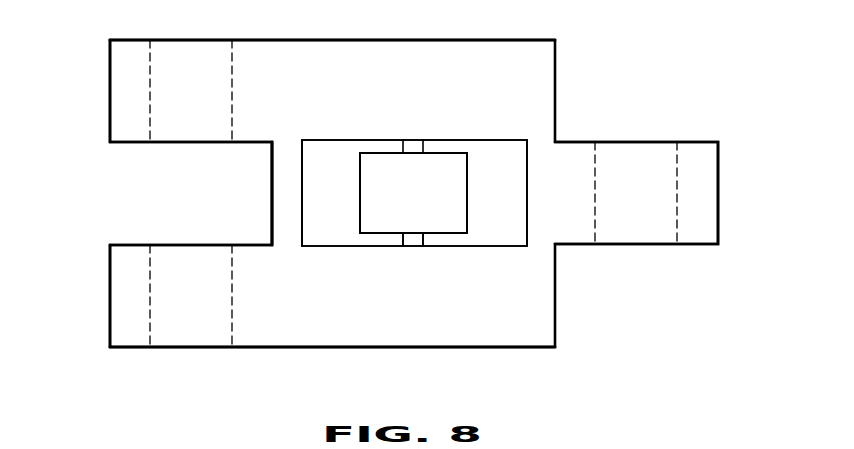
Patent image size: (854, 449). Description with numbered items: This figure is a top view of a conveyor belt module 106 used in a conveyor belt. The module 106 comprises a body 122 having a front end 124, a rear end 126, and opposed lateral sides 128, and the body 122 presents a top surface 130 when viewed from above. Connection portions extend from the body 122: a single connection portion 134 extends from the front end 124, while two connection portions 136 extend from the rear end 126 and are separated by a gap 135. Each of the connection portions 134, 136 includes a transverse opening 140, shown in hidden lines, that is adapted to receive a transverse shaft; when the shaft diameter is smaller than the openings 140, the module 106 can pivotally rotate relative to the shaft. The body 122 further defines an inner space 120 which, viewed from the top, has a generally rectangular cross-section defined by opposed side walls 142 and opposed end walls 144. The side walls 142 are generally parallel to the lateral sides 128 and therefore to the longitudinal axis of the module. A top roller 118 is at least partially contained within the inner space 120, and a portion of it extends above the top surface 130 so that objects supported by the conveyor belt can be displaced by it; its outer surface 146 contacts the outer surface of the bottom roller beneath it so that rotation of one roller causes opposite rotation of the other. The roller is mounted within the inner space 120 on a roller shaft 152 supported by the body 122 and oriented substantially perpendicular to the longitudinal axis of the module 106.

The conveyor belt module 106 is at (697, 57).
The top roller 118 is at (390, 220).
The inner space 120 is at (322, 167).
The body 122 is at (499, 57).
The front end 124 is at (567, 298).
The rear end 126 is at (257, 194).
The lateral sides 128 is at (284, 39).
The top surface 130 is at (430, 97).
The connection portion 134 is at (698, 165).
The gap 135 is at (152, 186).
The connection portions 136 is at (115, 60).
The transverse opening 140 is at (230, 66).
The side walls 142 is at (525, 162).
The end walls 144 is at (369, 139).
The outer surface 146 is at (430, 206).
The roller shaft 152 is at (413, 243).